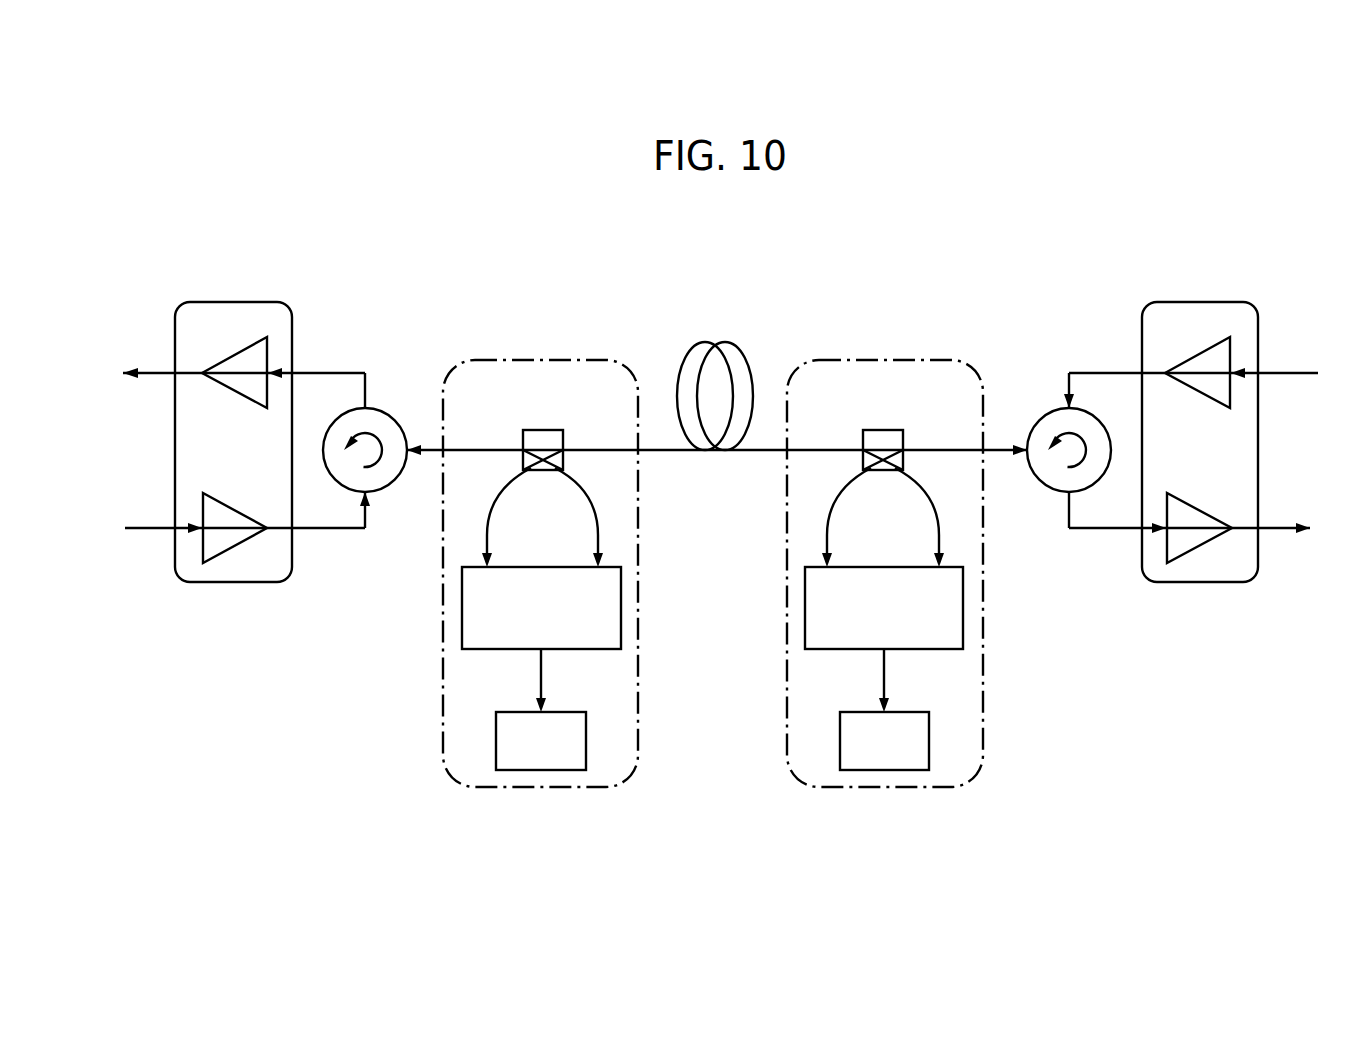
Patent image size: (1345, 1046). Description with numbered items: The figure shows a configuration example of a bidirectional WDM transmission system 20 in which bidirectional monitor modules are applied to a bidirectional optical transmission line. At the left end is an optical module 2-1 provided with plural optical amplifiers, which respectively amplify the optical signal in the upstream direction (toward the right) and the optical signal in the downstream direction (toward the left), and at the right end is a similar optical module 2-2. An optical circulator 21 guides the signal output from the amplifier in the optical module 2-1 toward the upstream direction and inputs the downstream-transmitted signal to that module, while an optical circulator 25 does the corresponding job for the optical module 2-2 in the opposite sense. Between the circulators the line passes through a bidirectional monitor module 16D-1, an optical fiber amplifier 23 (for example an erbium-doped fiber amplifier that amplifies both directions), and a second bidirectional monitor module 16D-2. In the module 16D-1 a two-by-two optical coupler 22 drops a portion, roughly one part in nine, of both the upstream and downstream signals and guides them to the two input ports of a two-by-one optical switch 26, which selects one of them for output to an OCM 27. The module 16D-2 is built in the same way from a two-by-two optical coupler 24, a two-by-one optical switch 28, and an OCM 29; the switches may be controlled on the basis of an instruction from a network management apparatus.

The bidirectional WDM transmission system 20 is at (1001, 232).
The optical module 2-1 is at (240, 302).
The optical module 2-2 is at (1196, 302).
The optical circulator 21 is at (386, 412).
The optical circulator 25 is at (1041, 416).
The bidirectional monitor module 16D-1 is at (521, 360).
The bidirectional monitor module 16D-2 is at (872, 360).
The 2×2 optical coupler 22 is at (547, 430).
The 2×2 optical coupler 24 is at (885, 430).
The optical fiber amplifier 23 is at (722, 342).
The 2×1 optical switch 26 is at (621, 605).
The 2×1 optical switch 28 is at (963, 609).
The OCM 27 is at (586, 733).
The OCM 29 is at (929, 735).